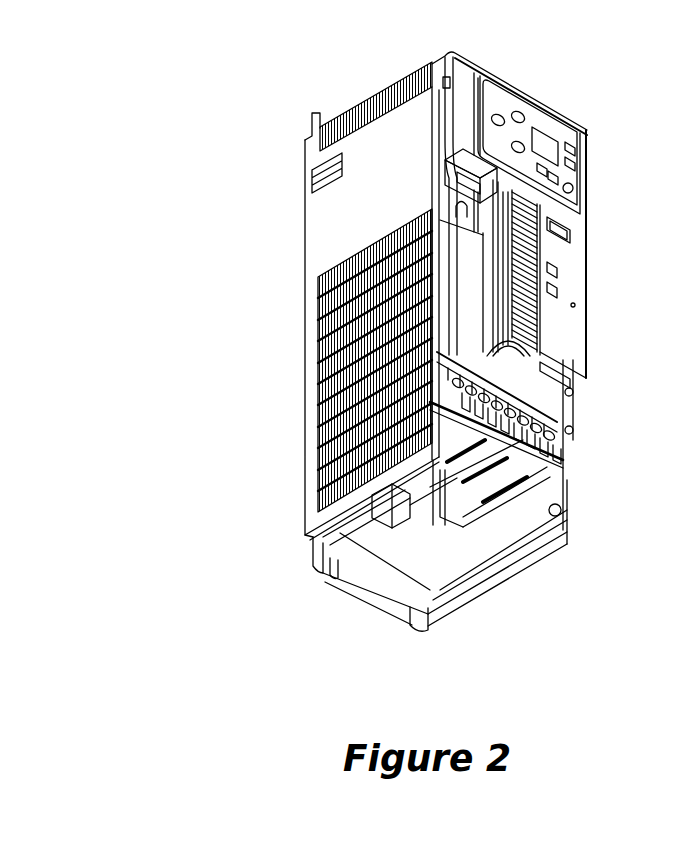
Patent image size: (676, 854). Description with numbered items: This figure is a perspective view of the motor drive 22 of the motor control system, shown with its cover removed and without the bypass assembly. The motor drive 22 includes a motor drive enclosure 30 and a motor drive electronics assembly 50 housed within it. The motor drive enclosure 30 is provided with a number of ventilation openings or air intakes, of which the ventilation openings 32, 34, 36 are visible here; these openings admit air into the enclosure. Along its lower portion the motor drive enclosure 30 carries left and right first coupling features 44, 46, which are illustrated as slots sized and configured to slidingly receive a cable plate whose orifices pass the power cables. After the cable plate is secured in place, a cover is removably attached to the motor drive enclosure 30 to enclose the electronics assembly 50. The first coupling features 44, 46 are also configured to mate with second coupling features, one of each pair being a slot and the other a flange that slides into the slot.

The motor drive 22 is at (210, 95).
The motor drive enclosure 30 is at (287, 153).
The ventilation opening 32 is at (317, 452).
The ventilation opening 34 is at (318, 336).
The ventilation opening 36 is at (334, 122).
The left first coupling feature 44 is at (356, 535).
The right first coupling feature 46 is at (513, 541).
The motor drive electronics assembly 50 is at (600, 192).